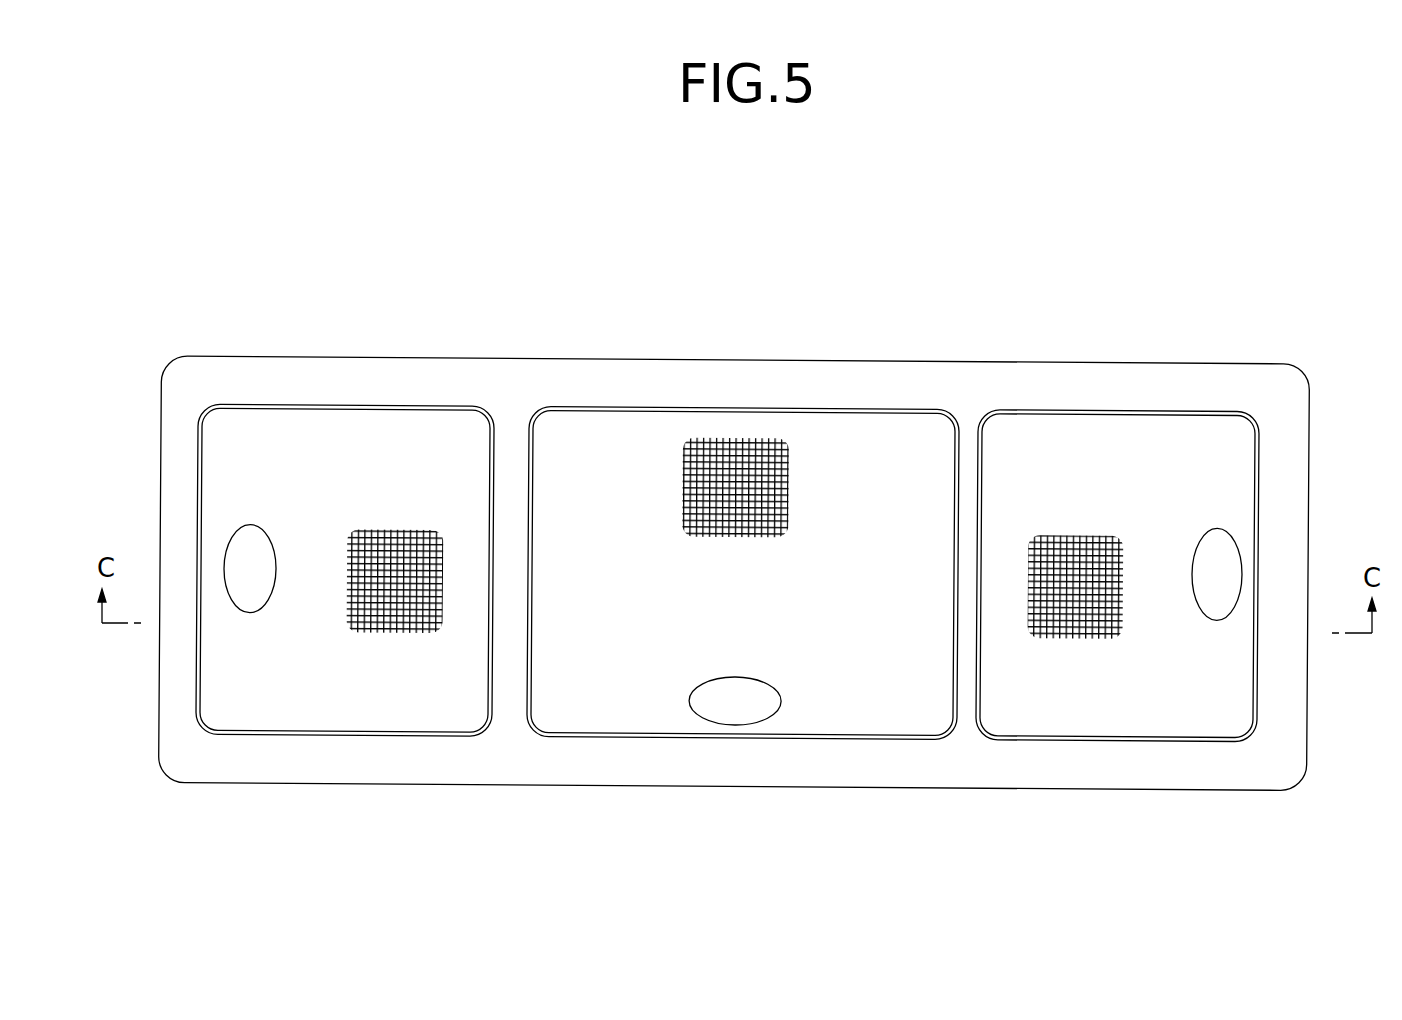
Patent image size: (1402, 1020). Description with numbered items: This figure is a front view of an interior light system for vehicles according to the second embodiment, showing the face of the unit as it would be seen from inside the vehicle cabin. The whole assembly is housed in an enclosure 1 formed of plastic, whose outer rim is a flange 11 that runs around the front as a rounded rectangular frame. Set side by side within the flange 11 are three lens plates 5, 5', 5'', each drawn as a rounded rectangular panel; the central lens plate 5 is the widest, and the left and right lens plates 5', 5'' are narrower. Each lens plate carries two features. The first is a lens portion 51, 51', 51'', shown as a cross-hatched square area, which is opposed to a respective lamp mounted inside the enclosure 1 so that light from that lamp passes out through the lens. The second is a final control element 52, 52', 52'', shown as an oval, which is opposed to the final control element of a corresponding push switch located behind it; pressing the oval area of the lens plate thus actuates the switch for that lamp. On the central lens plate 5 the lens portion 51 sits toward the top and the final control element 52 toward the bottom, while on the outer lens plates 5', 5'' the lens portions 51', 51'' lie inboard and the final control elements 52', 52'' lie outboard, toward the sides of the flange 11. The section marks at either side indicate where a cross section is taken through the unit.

The enclosure 1 is at (731, 568).
The flange 11 is at (967, 383).
The lens plate 5 is at (743, 569).
The lens plate 5' is at (289, 564).
The lens plate 5'' is at (1176, 568).
The lens portion 51 is at (718, 406).
The lens portion 51' is at (395, 692).
The lens portion 51'' is at (1076, 699).
The final control element 52 is at (735, 770).
The final control element 52' is at (180, 540).
The final control element 52'' is at (1284, 549).